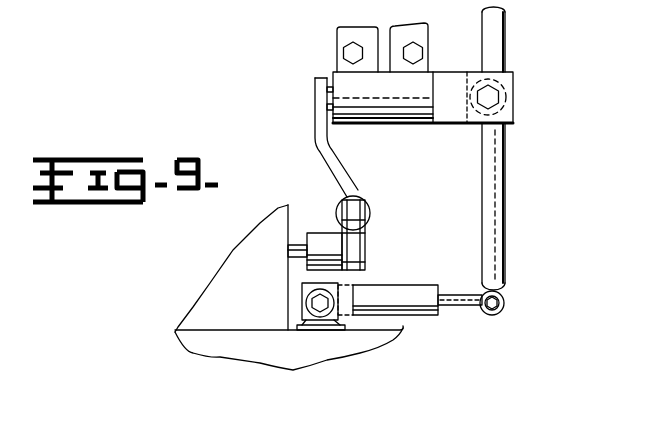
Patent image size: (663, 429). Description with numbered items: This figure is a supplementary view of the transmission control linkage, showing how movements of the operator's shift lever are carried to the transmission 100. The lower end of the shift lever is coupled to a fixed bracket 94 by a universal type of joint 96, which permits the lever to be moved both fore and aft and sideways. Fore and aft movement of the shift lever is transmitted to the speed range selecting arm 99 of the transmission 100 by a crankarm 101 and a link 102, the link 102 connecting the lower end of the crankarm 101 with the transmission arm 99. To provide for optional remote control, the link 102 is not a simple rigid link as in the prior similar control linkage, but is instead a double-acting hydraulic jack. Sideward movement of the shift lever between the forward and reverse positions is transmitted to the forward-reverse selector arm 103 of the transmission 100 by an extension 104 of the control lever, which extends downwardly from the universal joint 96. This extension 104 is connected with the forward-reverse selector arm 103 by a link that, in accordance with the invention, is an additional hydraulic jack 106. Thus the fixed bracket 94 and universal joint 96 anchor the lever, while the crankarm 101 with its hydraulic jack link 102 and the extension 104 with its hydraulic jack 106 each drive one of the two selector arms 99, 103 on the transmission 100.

The fixed bracket 94 is at (347, 32).
The universal joint 96 is at (490, 96).
The speed range selecting arm 99 is at (362, 235).
The transmission 100 is at (248, 348).
The crankarm 101 is at (318, 136).
The link 102 is at (355, 197).
The forward-reverse selector arm 103 is at (322, 315).
The extension 104 is at (490, 215).
The hydraulic jack 106 is at (380, 293).